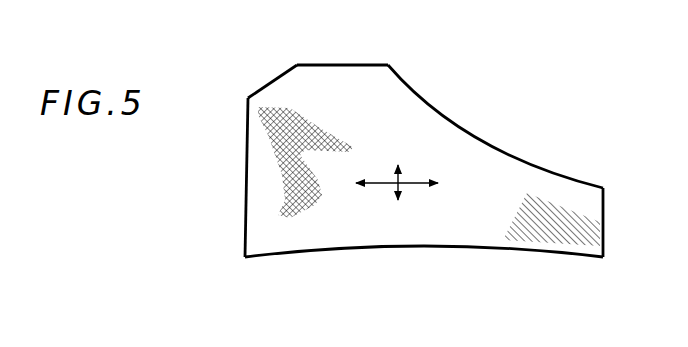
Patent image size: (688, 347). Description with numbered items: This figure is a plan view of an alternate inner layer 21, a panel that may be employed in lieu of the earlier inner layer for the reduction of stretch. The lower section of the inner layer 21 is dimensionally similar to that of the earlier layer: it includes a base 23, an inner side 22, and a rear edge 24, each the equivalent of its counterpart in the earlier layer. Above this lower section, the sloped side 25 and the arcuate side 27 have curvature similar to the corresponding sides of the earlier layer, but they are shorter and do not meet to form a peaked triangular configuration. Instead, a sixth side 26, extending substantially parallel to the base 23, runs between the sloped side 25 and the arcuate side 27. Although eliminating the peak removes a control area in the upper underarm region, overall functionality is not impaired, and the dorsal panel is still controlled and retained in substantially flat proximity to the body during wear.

The inner layer 21 is at (430, 168).
The inner side 22 is at (246, 211).
The base 23 is at (445, 252).
The rear edge 24 is at (604, 236).
The sloped side 25 is at (530, 161).
The sixth side 26 is at (367, 47).
The arcuate side 27 is at (274, 81).